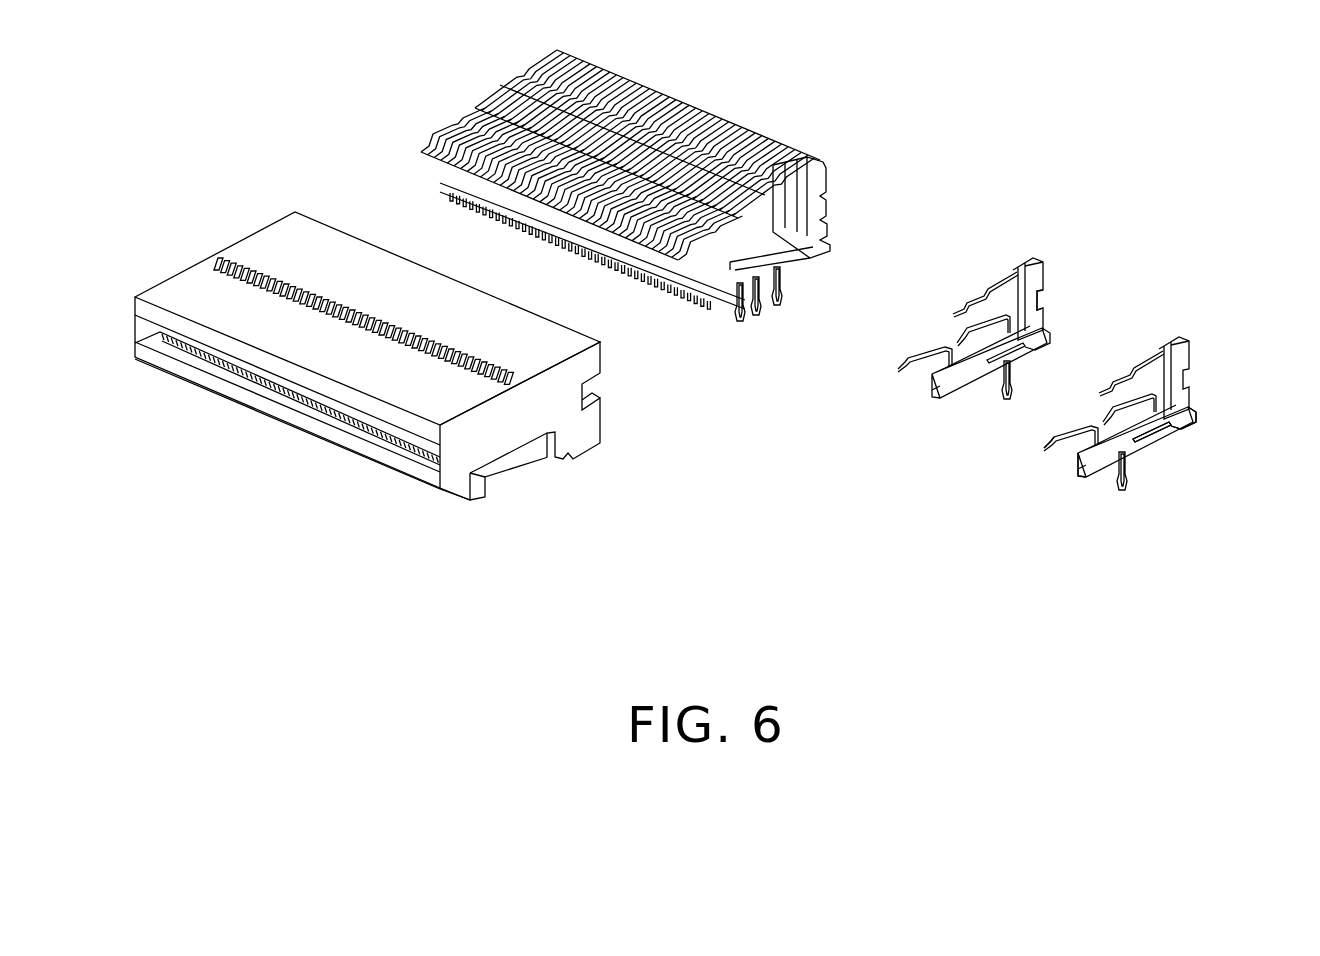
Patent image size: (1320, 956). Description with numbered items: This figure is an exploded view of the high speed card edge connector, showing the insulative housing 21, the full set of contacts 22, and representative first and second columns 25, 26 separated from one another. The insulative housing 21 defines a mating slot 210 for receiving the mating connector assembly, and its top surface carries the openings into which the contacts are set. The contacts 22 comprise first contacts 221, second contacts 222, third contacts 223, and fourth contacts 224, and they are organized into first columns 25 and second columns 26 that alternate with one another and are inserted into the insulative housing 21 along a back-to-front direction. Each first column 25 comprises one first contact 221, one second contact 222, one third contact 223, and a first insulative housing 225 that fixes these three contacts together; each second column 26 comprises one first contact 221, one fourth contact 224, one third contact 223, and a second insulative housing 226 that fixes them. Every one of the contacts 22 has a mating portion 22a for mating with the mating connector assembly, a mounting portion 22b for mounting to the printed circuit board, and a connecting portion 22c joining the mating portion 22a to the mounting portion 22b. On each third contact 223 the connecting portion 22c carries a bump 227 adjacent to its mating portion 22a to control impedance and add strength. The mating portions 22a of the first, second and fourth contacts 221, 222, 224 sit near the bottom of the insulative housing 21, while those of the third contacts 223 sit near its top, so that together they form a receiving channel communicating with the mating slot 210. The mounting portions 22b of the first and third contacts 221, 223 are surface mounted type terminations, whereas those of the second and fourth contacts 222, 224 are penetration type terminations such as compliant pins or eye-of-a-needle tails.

The insulative housing 21 is at (285, 248).
The mating slot 210 is at (362, 428).
The contacts 22 is at (532, 85).
The first contacts 221 is at (905, 357).
The second contacts 222 is at (1107, 407).
The third contacts 223 is at (988, 283).
The fourth contacts 224 is at (960, 333).
The first insulative housing 225 is at (1200, 415).
The second insulative housing 226 is at (1050, 320).
The bump 227 is at (1017, 272).
The first columns 25 is at (1198, 326).
The second columns 26 is at (1050, 252).
The mating portion 22a is at (1055, 446).
The mounting portion 22b is at (1088, 480).
The connecting portion 22c is at (1137, 440).